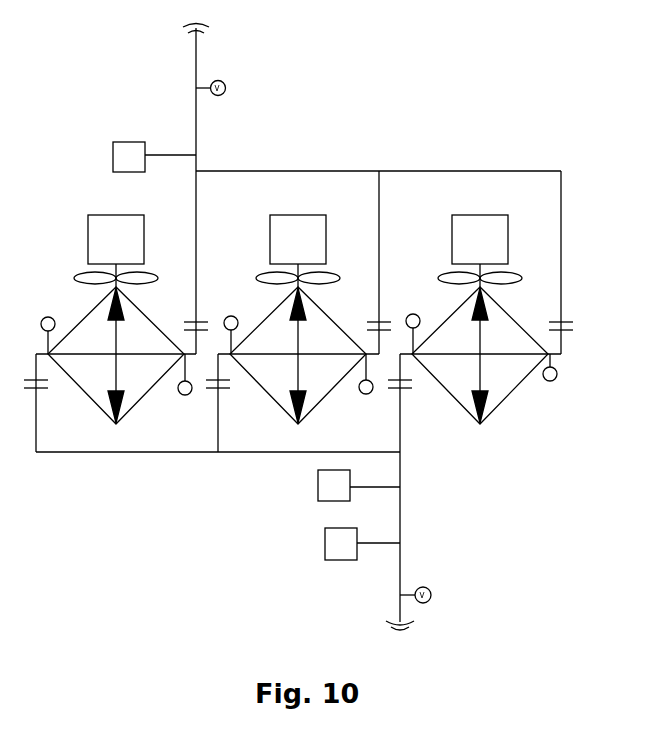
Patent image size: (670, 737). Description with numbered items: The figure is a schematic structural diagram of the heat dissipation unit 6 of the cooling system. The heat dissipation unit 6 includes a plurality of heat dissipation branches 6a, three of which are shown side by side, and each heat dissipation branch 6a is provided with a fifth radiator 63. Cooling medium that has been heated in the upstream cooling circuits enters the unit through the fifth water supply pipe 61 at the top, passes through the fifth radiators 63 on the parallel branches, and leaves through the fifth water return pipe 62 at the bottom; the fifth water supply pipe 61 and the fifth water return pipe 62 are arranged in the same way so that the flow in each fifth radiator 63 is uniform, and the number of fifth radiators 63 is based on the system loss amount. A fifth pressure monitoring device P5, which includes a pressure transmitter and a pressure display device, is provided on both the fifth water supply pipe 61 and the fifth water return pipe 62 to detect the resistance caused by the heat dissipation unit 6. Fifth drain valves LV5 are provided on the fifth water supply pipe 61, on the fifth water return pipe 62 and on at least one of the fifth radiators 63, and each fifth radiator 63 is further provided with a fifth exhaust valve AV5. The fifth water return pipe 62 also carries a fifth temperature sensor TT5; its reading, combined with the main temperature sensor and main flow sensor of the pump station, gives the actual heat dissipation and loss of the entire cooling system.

The heat dissipation unit 6 is at (346, 32).
The fifth water supply pipe 61 is at (196, 58).
The fifth water return pipe 62 is at (396, 610).
The heat dissipation branch 6a is at (197, 243).
The fifth radiator 63 is at (85, 318).
The fifth pressure monitoring device P5 is at (178, 155).
The fifth drain valve LV5 is at (222, 95).
The fifth exhaust valve AV5 is at (413, 358).
The fifth temperature sensor TT5 is at (362, 492).